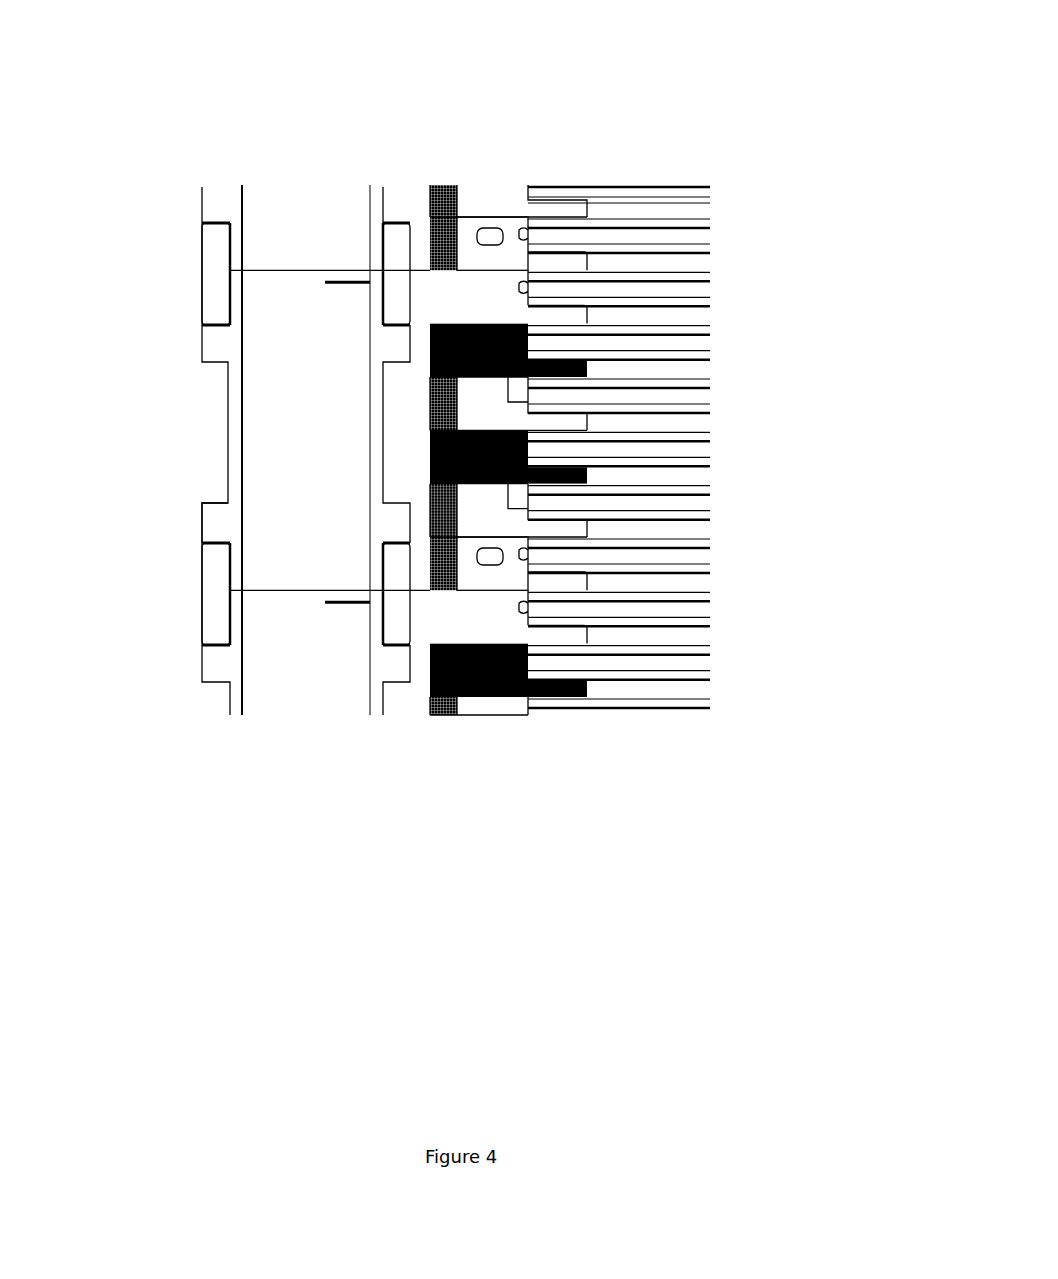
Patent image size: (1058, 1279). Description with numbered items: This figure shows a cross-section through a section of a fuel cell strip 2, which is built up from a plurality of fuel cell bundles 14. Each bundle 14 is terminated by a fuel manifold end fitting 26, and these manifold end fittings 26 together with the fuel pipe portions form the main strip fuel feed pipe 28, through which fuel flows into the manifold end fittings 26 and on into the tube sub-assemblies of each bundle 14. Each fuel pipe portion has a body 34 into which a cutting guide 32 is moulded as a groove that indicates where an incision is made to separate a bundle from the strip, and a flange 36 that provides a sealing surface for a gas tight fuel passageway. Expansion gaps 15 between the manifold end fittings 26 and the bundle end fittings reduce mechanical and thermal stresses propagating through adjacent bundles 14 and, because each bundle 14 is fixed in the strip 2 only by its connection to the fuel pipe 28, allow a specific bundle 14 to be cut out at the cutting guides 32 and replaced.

The fuel cell strip 2 is at (692, 106).
The fuel cell bundle 14 is at (720, 591).
The expansion gap 15 is at (527, 270).
The fuel manifold end fitting 26 is at (420, 297).
The fuel feed pipe 28 is at (275, 717).
The cutting guide 32 is at (383, 435).
The body 34 is at (235, 422).
The flange 36 is at (203, 525).